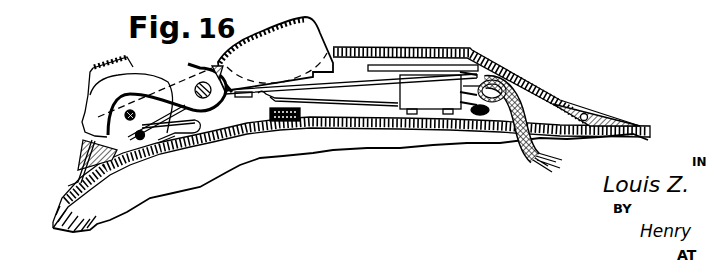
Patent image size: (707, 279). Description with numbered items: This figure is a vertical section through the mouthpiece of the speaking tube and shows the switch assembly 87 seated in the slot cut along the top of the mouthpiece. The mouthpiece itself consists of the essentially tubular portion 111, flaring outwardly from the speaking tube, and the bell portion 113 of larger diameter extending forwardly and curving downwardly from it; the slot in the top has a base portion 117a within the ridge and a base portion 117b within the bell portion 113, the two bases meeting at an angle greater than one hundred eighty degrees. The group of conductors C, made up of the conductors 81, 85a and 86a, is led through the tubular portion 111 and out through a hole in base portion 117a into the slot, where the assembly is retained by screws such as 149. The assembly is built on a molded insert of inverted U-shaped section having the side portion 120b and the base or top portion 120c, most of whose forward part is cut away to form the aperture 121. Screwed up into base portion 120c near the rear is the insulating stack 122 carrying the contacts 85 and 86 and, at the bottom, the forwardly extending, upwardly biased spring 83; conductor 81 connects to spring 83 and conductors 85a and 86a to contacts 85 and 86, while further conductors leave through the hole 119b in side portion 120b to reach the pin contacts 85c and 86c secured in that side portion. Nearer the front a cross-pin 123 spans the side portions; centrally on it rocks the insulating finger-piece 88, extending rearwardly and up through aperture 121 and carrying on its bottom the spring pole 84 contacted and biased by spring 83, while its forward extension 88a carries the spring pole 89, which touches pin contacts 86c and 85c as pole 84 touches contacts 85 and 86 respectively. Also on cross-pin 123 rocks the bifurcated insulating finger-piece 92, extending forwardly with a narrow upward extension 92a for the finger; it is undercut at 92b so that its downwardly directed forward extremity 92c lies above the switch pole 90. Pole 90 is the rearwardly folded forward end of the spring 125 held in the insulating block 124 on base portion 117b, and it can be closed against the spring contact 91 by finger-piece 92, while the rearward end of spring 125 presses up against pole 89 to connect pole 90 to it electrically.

The conductor 81 is at (462, 120).
The spring 83 is at (338, 100).
The spring pole 84 is at (351, 81).
The contact 85 is at (392, 60).
The conductor 85a is at (477, 83).
The pin contact 85c is at (127, 112).
The contact 86 is at (373, 103).
The conductor 86a is at (515, 92).
The pin contact 86c is at (173, 148).
The switch assembly 87 is at (364, 32).
The insulating finger-piece 88 is at (306, 35).
The extension 88a is at (160, 107).
The spring pole 89 is at (95, 120).
The switch pole 90 is at (88, 146).
The spring contact 91 is at (85, 150).
The bifurcated insulating finger-piece 92 is at (85, 77).
The upward extension 92a is at (113, 62).
The undercut 92b is at (88, 70).
The forward extremity 92c is at (83, 123).
The tubular portion 111 is at (650, 125).
The bell portion 113 is at (53, 217).
The base portion 117a is at (392, 120).
The base portion 117b is at (207, 187).
The hole 119b is at (467, 62).
The insert side portion 120b is at (573, 92).
The base portion 120c is at (486, 82).
The aperture 121 is at (328, 48).
The insulating stack 122 is at (438, 93).
The cross-pin 123 is at (213, 70).
The insulating block 124 is at (118, 176).
The spring 125 is at (91, 229).
The screw 149 is at (284, 128).
The group of conductors C is at (533, 167).